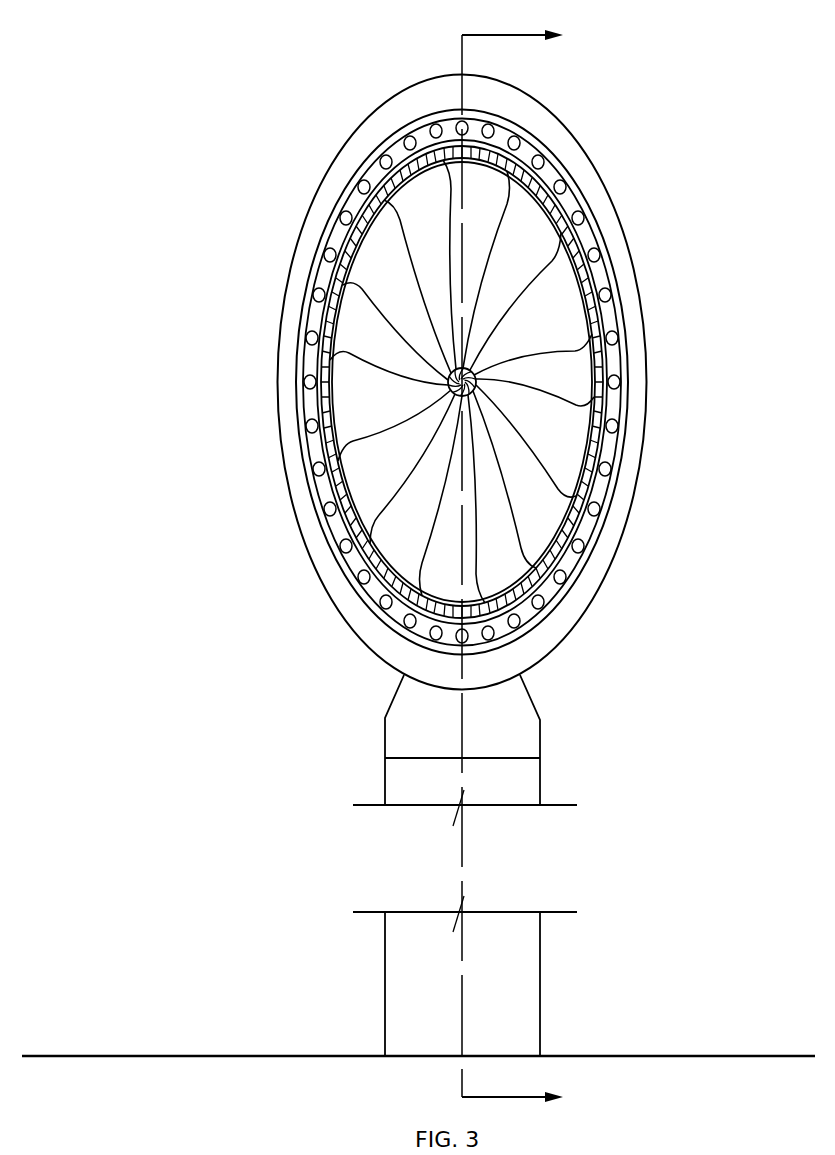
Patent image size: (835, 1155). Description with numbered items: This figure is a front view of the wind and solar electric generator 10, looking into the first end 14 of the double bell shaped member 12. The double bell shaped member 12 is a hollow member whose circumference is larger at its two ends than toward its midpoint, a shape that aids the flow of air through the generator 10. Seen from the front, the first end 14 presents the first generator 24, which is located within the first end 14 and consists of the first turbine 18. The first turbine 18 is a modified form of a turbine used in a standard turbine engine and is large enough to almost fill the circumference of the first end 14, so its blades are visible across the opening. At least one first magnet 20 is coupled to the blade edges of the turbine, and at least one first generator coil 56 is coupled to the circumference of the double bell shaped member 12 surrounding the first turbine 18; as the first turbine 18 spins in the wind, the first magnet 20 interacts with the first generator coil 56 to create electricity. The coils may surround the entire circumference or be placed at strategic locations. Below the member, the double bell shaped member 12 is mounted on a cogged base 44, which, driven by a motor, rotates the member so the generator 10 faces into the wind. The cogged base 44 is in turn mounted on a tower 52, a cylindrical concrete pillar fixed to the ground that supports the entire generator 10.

The wind and solar electric generator 10 is at (657, 130).
The double bell shaped member 12 is at (636, 249).
The first end 14 is at (622, 418).
The first turbine 18 is at (535, 533).
The first magnet 20 is at (548, 190).
The first generator 24 is at (573, 460).
The cogged base 44 is at (540, 775).
The tower 52 is at (540, 990).
The first generator coil 56 is at (621, 339).